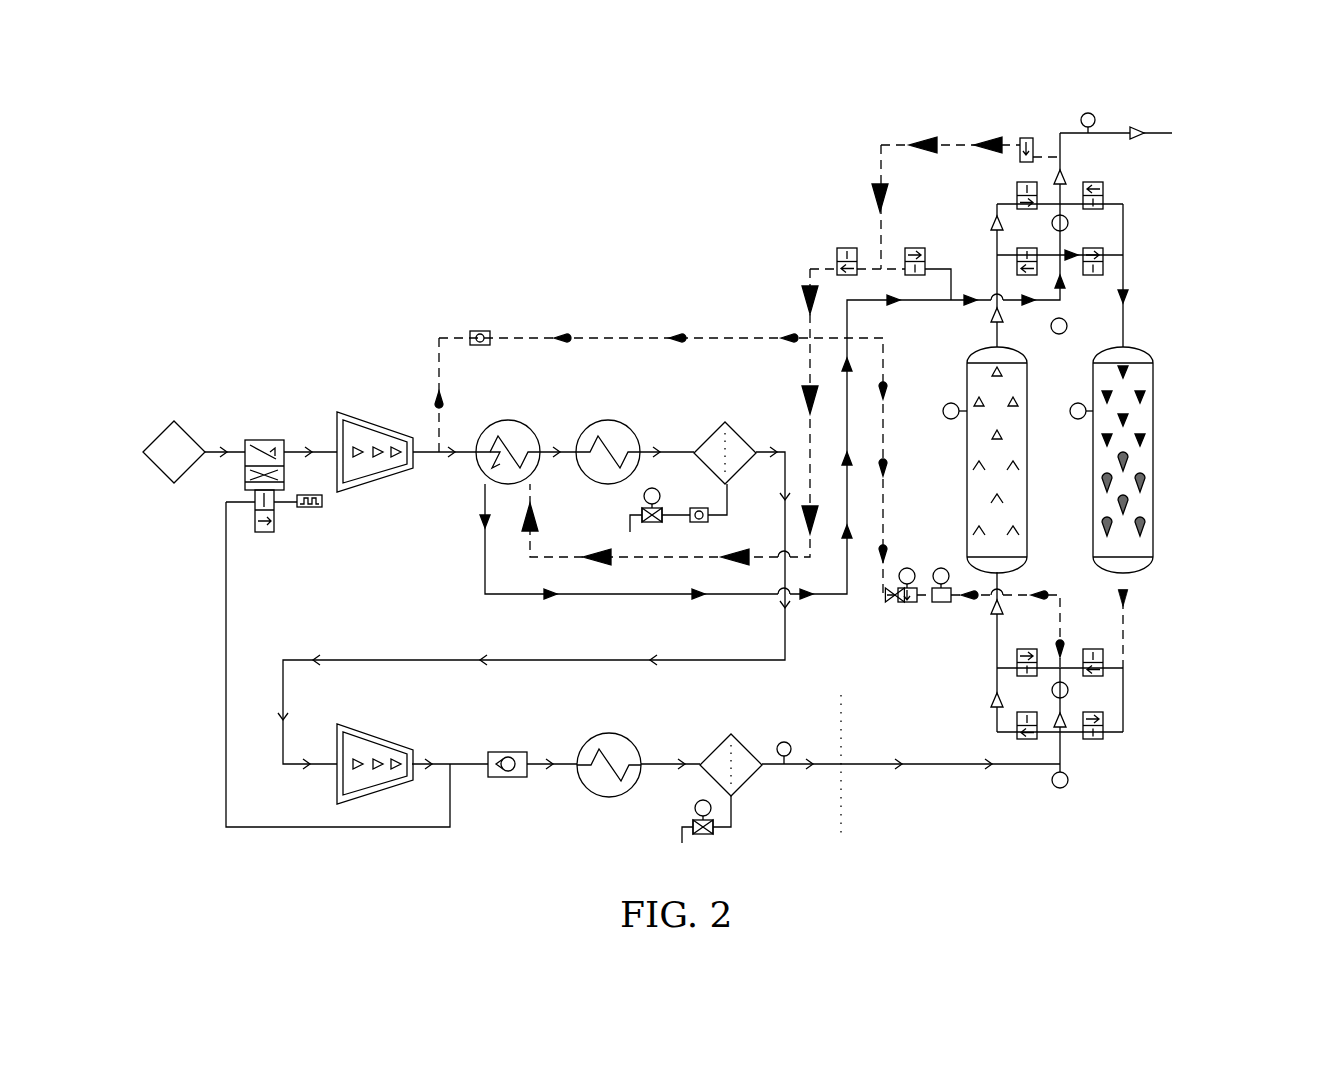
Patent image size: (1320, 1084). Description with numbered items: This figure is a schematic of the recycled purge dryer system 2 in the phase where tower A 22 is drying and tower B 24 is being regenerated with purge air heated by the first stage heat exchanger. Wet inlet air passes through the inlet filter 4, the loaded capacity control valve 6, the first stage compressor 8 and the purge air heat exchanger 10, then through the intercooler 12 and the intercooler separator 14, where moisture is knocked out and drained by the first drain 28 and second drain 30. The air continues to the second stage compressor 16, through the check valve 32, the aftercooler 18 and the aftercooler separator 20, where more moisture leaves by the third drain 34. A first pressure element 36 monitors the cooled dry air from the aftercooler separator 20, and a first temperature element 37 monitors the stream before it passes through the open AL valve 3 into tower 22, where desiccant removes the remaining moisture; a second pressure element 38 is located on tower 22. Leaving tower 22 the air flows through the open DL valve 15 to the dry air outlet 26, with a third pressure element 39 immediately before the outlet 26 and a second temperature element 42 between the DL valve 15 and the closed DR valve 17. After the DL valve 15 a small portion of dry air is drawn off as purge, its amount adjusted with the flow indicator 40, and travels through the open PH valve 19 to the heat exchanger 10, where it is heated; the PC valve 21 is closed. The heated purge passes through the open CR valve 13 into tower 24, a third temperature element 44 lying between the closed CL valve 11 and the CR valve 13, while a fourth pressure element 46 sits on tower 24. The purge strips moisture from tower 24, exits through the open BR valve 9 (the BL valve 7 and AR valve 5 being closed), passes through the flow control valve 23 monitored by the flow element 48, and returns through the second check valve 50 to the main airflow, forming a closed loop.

The recycled purge dryer system 2 is at (326, 327).
The AL valve 3 is at (1017, 735).
The inlet filter 4 is at (155, 465).
The AR valve 5 is at (1103, 718).
The loaded capacity control valve 6 is at (245, 468).
The BL valve 7 is at (1017, 670).
The first stage compressor 8 is at (376, 483).
The BR valve 9 is at (1103, 652).
The purge air heat exchanger 10 is at (478, 470).
The CL valve 11 is at (1017, 262).
The intercooler 12 is at (594, 485).
The CR valve 13 is at (1103, 270).
The intercooler separator 14 is at (740, 428).
The DL valve 15 is at (1022, 182).
The second stage compressor 16 is at (337, 785).
The DR valve 17 is at (1088, 182).
The aftercooler 18 is at (586, 786).
The PH valve 19 is at (845, 248).
The aftercooler separator 20 is at (745, 780).
The PC valve 21 is at (910, 248).
The drying tower A 22 is at (1027, 528).
The flow control valve 23 is at (945, 602).
The drying tower B 24 is at (1153, 388).
The dry air outlet 26 is at (1172, 133).
The first drain 28 is at (700, 522).
The second drain 30 is at (652, 522).
The check valve 32 is at (508, 777).
The third drain 34 is at (703, 834).
The first pressure element 36 is at (784, 742).
The first temperature element 37 is at (1052, 780).
The second pressure element 38 is at (945, 417).
The third pressure element 39 is at (1096, 118).
The flow indicator 40 is at (1020, 142).
The second temperature element 42 is at (1068, 223).
The third temperature element 44 is at (1051, 326).
The fourth pressure element 46 is at (1072, 417).
The flow element 48 is at (898, 605).
The second check valve 50 is at (480, 331).